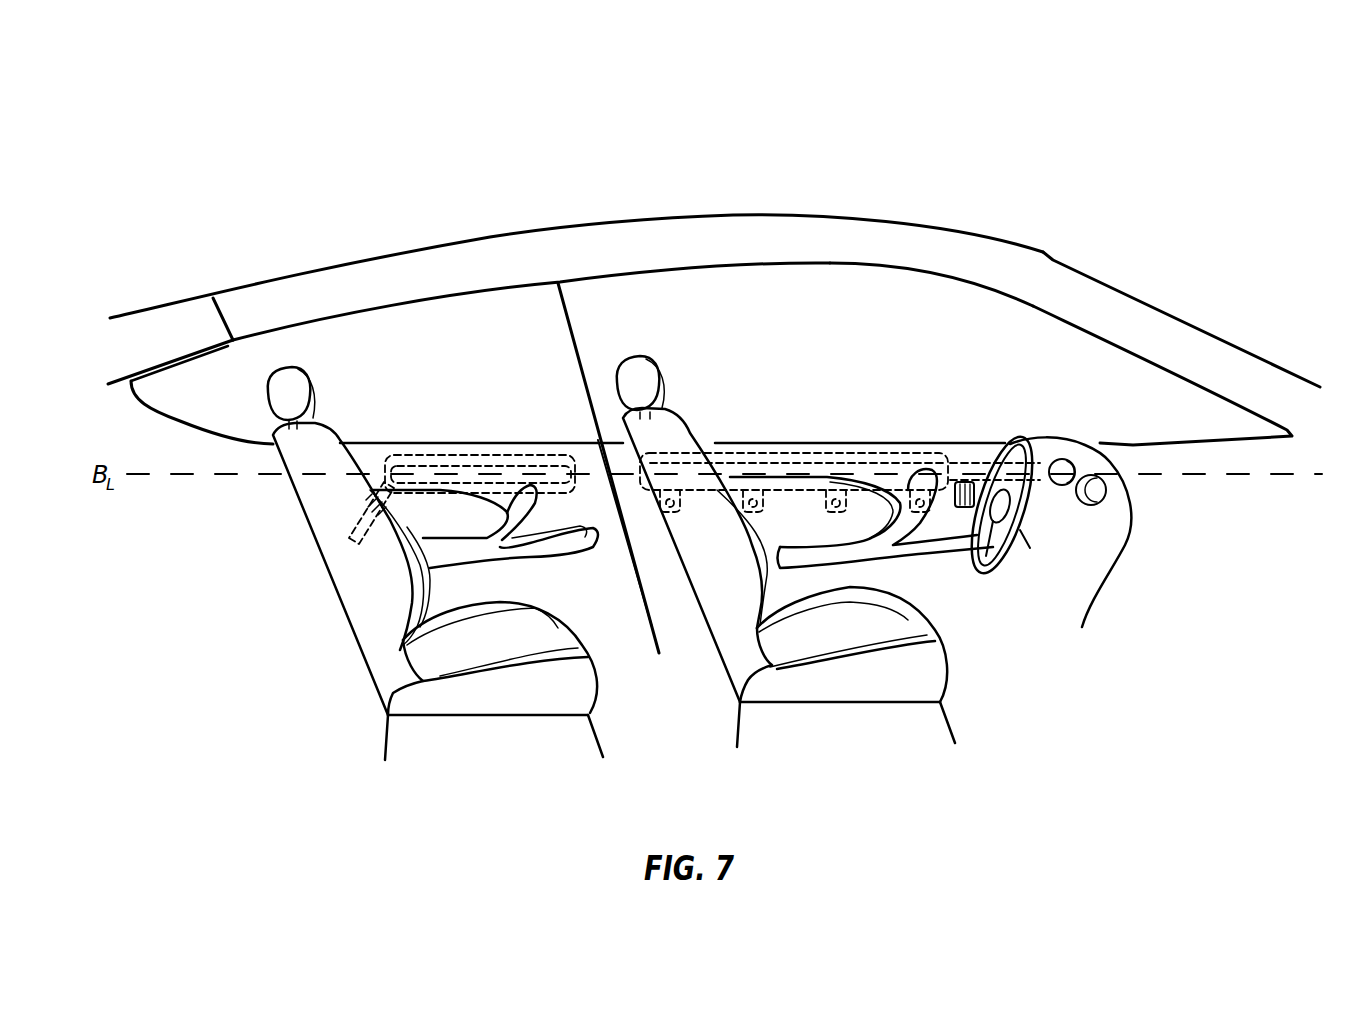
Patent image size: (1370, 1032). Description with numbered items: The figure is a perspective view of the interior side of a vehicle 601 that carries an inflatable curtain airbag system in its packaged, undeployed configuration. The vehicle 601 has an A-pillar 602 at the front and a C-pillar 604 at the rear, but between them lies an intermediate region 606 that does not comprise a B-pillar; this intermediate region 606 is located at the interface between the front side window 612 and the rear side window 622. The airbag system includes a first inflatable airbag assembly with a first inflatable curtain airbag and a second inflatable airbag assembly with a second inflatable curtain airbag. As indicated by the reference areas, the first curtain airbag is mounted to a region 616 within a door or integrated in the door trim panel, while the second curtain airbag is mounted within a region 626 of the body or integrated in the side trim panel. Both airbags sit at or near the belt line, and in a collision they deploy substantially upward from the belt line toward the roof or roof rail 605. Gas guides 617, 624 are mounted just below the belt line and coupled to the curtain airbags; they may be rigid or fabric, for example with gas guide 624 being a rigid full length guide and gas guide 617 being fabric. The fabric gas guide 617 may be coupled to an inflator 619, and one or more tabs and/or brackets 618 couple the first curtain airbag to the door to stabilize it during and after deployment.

The vehicle 601 is at (1086, 167).
The A-pillar 602 is at (1202, 363).
The C-pillar 604 is at (173, 333).
The roof rail 605 is at (757, 232).
The intermediate region 606 is at (589, 334).
The front side window 612 is at (933, 310).
The region within a door 616 is at (828, 455).
The gas guide 617 is at (900, 517).
The tabs and/or brackets 618 is at (820, 445).
The inflator 619 is at (1036, 484).
The rear side window 622 is at (350, 357).
The gas guide 624 is at (357, 522).
The region of the body 626 is at (470, 455).